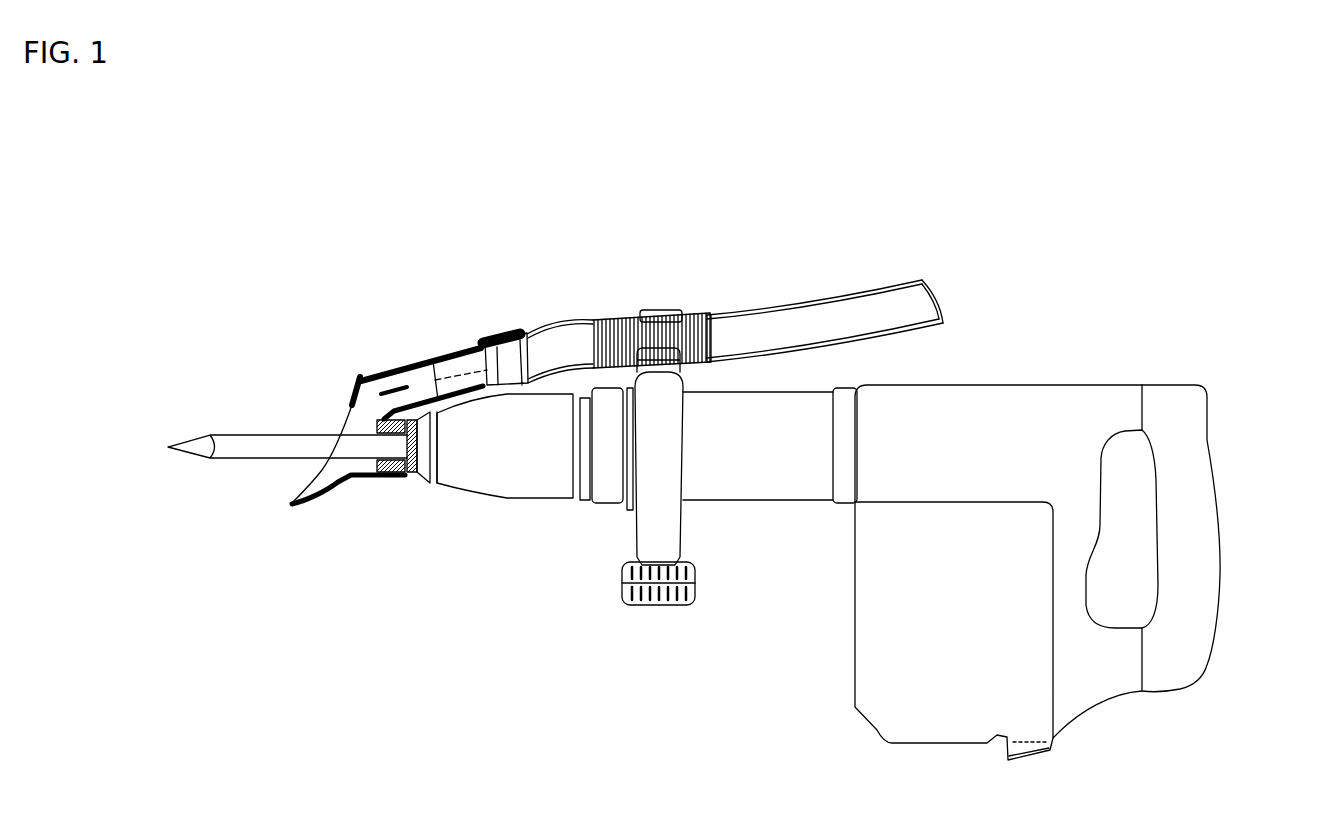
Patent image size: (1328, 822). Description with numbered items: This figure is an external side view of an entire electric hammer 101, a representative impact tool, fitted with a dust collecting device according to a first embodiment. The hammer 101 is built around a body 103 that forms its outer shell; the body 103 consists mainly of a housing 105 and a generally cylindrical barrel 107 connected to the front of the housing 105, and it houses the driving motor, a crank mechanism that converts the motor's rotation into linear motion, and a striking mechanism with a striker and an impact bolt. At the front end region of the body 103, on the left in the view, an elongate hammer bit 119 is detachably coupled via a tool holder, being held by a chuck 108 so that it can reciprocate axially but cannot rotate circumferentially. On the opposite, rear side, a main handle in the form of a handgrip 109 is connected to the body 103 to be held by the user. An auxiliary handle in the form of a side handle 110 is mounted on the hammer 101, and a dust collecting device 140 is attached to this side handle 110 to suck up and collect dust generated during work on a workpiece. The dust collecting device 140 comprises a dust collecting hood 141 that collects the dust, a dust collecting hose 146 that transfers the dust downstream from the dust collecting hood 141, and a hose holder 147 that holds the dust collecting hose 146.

The electric hammer 101 is at (853, 491).
The body 103 is at (1032, 385).
The housing 105 is at (858, 535).
The barrel 107 is at (757, 390).
The chuck 108 is at (505, 490).
The handgrip 109 is at (1219, 462).
The side handle 110 is at (632, 530).
The hammer bit 119 is at (245, 440).
The dust collecting device 140 is at (608, 362).
The dust collecting hood 141 is at (358, 378).
The dust collecting hose 146 is at (565, 320).
The hose holder 147 is at (657, 313).